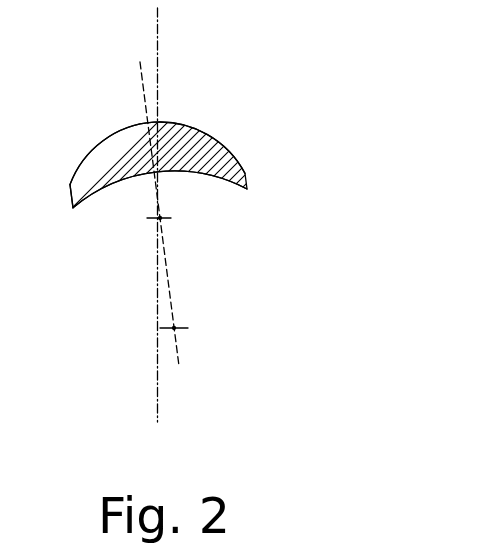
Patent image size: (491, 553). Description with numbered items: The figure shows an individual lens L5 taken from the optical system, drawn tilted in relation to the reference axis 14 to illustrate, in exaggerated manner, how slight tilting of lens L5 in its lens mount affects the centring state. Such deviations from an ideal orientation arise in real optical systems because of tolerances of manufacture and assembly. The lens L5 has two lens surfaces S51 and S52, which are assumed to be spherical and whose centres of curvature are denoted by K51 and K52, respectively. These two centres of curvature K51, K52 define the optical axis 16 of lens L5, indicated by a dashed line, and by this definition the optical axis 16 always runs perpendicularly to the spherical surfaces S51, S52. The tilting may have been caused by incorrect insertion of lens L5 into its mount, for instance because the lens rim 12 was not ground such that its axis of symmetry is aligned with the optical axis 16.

The optical axis 14 is at (158, 43).
The optical axis 16 is at (180, 372).
The lens rim 12 is at (71, 193).
The lens L5 is at (241, 173).
The lens surface S51 is at (100, 141).
The lens surface S52 is at (93, 198).
The centre of curvature K51 is at (164, 221).
The centre of curvature K52 is at (178, 332).